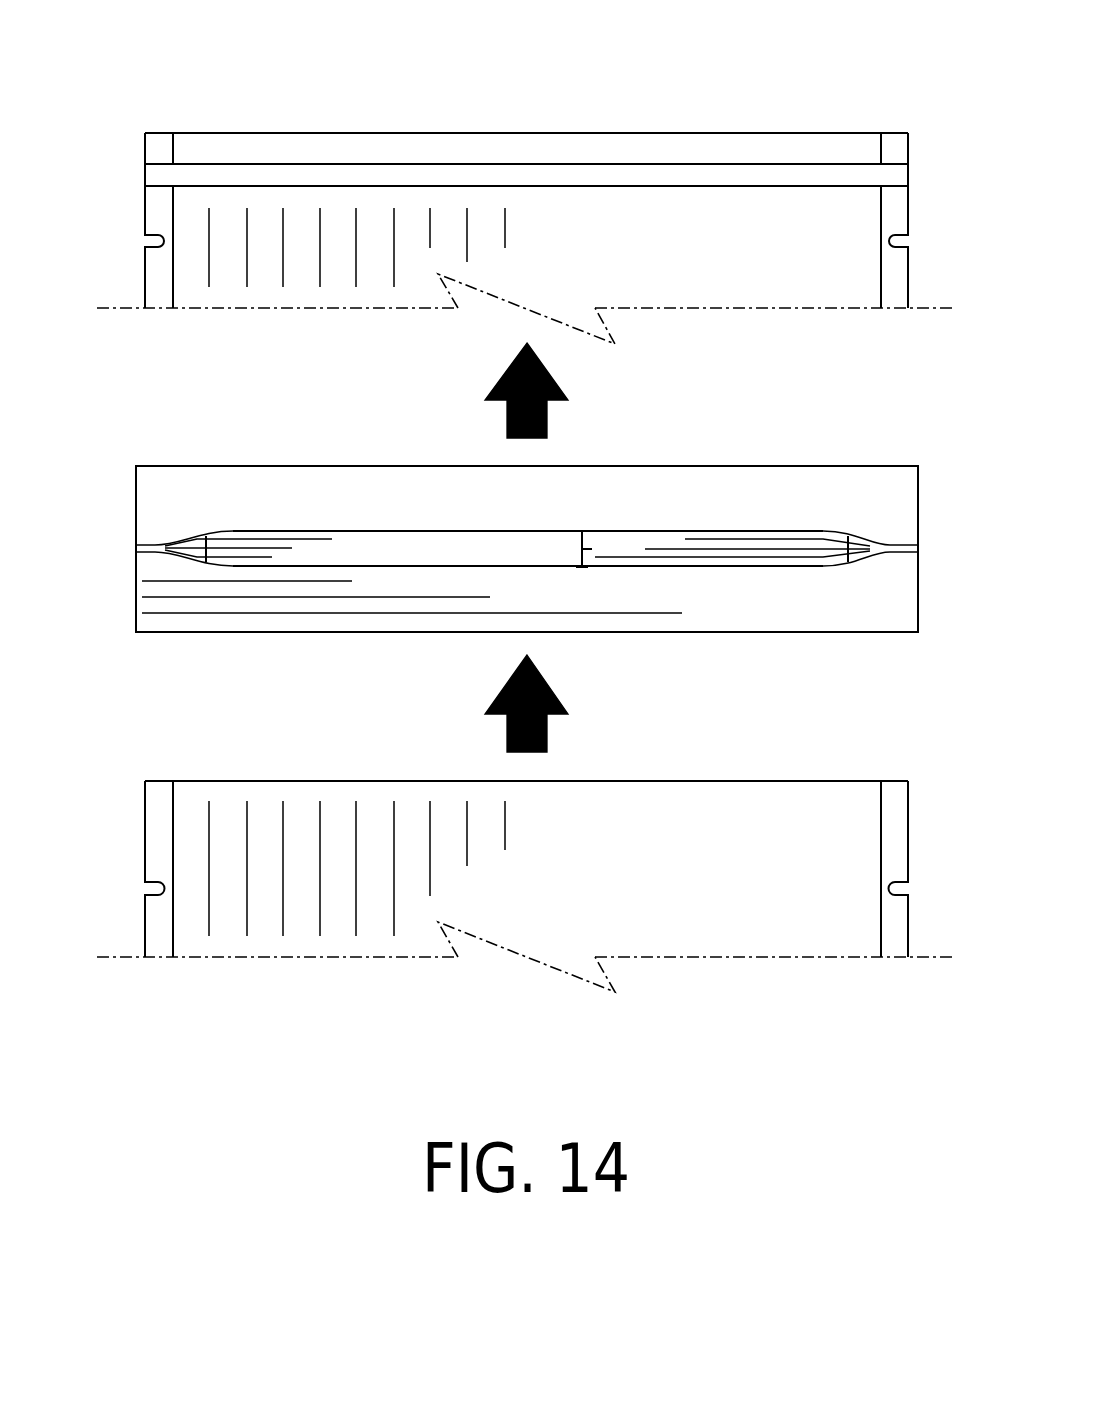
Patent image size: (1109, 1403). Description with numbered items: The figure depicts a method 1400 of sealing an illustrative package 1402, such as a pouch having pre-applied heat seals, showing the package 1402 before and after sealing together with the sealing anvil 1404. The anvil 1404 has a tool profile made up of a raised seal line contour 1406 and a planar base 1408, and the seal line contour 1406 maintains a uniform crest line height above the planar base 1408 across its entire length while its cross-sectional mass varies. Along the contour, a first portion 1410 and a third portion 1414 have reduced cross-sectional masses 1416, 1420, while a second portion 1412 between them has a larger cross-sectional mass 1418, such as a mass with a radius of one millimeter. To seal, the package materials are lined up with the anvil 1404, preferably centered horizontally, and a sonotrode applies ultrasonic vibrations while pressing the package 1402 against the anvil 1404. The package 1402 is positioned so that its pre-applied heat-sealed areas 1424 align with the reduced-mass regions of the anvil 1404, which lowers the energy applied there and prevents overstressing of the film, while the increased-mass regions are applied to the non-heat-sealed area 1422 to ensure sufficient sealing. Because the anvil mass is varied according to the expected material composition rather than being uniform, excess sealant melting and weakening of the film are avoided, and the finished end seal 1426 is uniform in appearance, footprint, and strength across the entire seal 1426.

The method 1400 is at (636, 81).
The package 1402 is at (777, 292).
The anvil 1404 is at (720, 476).
The seal line contour 1406 is at (322, 538).
The planar base 1408 is at (153, 476).
The first portion 1410 is at (187, 545).
The second portion 1412 is at (458, 538).
The third portion 1414 is at (860, 540).
The reduced cross-sectional mass 1416 is at (233, 533).
The larger cross-sectional mass 1418 is at (592, 549).
The reduced cross-sectional mass 1420 is at (828, 538).
The non-heat-sealed area 1422 is at (821, 800).
The heat-sealed areas 1424 is at (158, 209).
The finished end seal 1426 is at (408, 170).